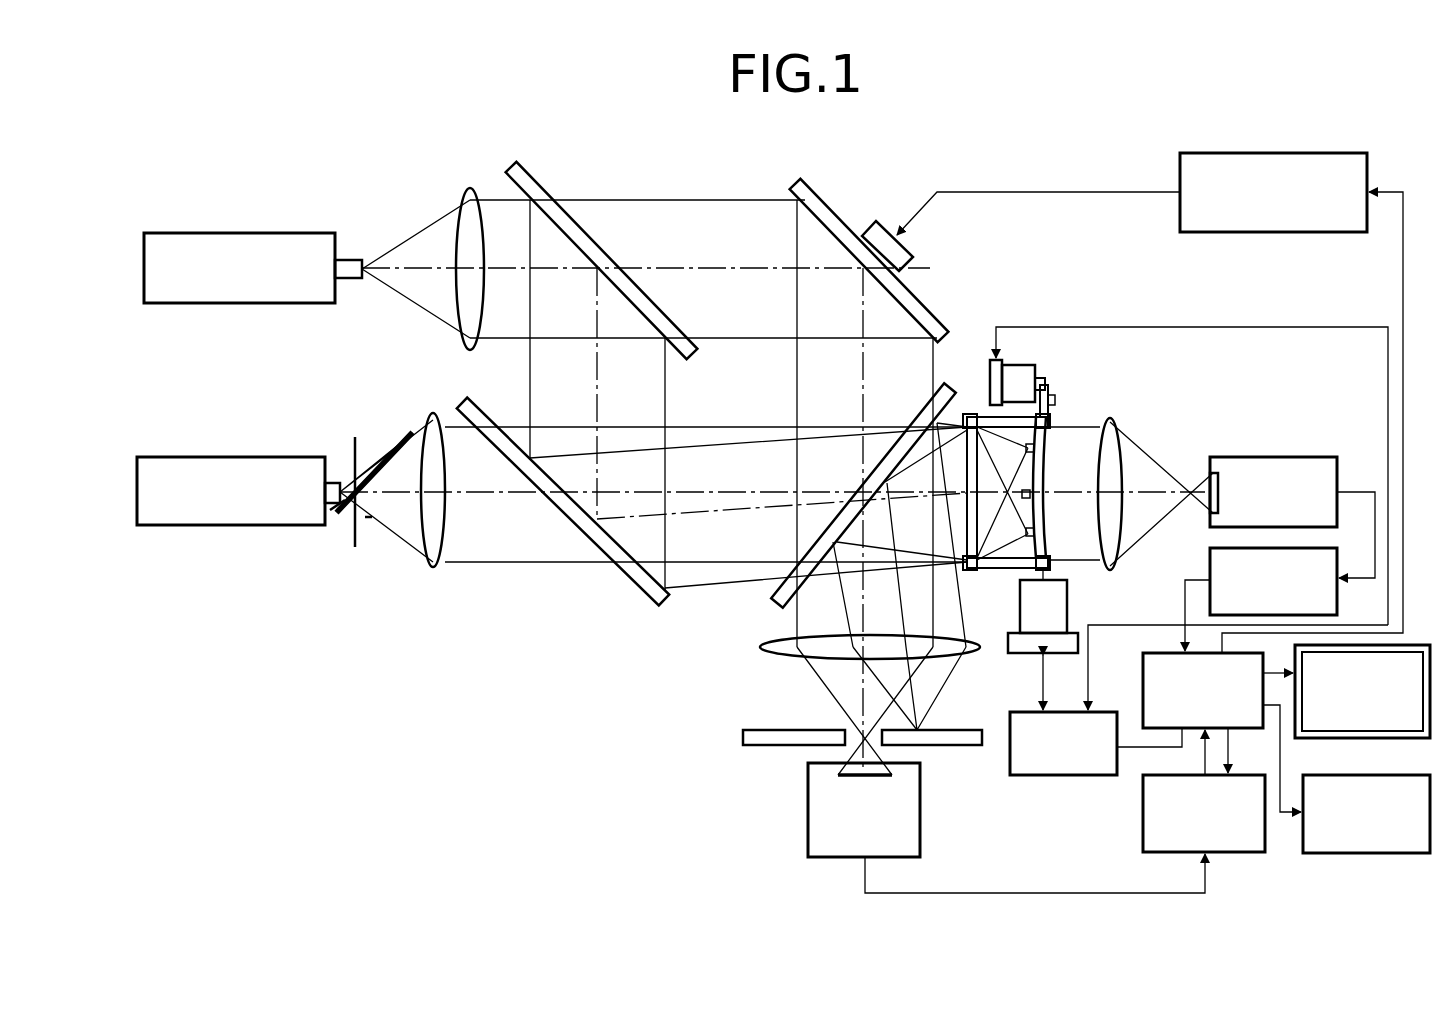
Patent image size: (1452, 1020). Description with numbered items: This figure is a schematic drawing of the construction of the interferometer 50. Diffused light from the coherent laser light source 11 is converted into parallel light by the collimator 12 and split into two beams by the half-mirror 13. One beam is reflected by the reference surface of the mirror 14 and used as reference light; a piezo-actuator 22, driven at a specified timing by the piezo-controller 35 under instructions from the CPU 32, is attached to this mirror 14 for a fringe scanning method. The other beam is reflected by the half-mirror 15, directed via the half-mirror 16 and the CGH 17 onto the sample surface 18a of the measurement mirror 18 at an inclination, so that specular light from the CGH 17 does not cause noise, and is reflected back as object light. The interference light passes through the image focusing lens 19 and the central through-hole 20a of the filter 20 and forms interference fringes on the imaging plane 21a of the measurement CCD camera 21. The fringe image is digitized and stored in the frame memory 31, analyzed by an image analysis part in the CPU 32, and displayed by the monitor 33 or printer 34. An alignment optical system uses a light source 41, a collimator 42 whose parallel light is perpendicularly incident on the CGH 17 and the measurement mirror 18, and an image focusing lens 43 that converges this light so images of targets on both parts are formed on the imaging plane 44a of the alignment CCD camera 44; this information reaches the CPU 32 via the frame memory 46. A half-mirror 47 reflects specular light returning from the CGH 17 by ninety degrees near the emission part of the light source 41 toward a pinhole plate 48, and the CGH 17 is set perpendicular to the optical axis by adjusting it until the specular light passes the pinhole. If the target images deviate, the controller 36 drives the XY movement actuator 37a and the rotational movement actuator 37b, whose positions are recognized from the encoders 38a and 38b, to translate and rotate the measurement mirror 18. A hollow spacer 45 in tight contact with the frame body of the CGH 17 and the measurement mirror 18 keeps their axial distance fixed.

The coherent light source 11 is at (178, 303).
The collimator 12 is at (468, 190).
The half-mirror 13 is at (544, 180).
The mirror 14 is at (816, 182).
The half-mirror 15 is at (642, 612).
The half-mirror 16 is at (778, 600).
The CGH (computer-generated hologram) 17 is at (966, 414).
The measurement mirror 18 is at (1155, 456).
The sample surface 18a is at (1003, 462).
The image focusing lens 19 is at (762, 647).
The filter 20 is at (940, 732).
The central through-hole 20a is at (845, 731).
The CCD camera used for measurement 21 is at (869, 808).
The imaging plane 21a is at (895, 776).
The piezo-actuator 22 is at (907, 244).
The frame memory 31 is at (1143, 830).
The CPU 32 is at (1143, 673).
The monitor 33 is at (1412, 645).
The printer 34 is at (1391, 853).
The piezo-controller 35 is at (1368, 173).
The controller 36 is at (1046, 778).
The XY movement actuator 37a is at (1067, 614).
The rotational movement actuator 37b is at (1010, 370).
The encoder 38a is at (1008, 654).
The encoder 38b is at (981, 354).
The light source 41 is at (177, 527).
The collimator 42 is at (438, 413).
The image focusing lens 43 is at (1121, 426).
The CCD camera used for alignment 44 is at (1276, 504).
The imaging plane 44a is at (1203, 474).
The hollow spacer 45 is at (1001, 572).
The frame memory 46 is at (1210, 568).
The half-mirror 47 is at (405, 435).
The pinhole plate 48 is at (349, 524).
The interferometer 50 is at (384, 192).